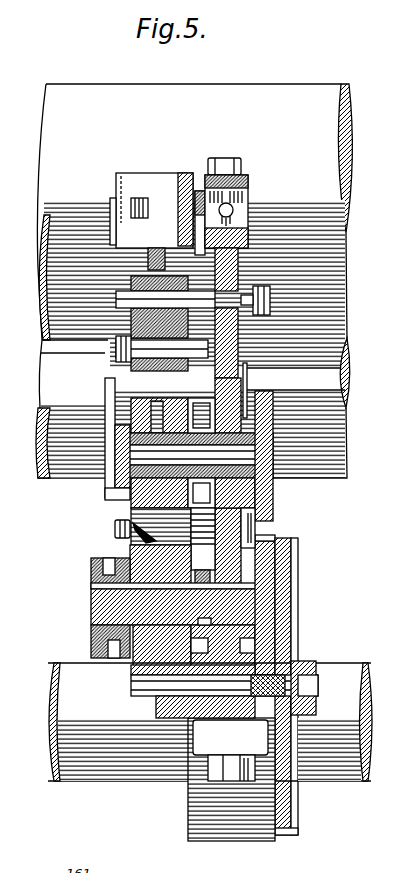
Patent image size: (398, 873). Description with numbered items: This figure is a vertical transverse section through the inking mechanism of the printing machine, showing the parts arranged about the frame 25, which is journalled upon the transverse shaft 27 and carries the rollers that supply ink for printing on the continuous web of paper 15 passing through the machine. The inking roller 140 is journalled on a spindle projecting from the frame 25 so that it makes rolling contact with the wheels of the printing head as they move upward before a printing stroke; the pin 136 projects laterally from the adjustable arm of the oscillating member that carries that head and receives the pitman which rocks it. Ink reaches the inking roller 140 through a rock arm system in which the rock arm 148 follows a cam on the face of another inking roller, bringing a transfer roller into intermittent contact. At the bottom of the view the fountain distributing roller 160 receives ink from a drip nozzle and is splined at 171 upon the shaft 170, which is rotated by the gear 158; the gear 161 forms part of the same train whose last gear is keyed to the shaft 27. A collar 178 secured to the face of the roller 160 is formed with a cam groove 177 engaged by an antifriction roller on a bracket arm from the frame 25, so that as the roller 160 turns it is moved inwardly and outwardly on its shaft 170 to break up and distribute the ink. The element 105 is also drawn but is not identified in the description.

The web of paper 15 is at (37, 108).
The inking roller 140 is at (160, 272).
The frame 25 is at (228, 345).
The rock arm 148 is at (76, 469).
The pin 136 is at (266, 492).
The set screw 105 is at (126, 525).
The cam groove 177 is at (96, 554).
The spline 171 is at (184, 576).
The shaft 170 is at (106, 596).
The collar 178 is at (86, 626).
The fountain distributing roller 160 is at (126, 655).
The gear 158 is at (248, 556).
The gear 161 is at (284, 599).
The transverse shaft 27 is at (327, 661).